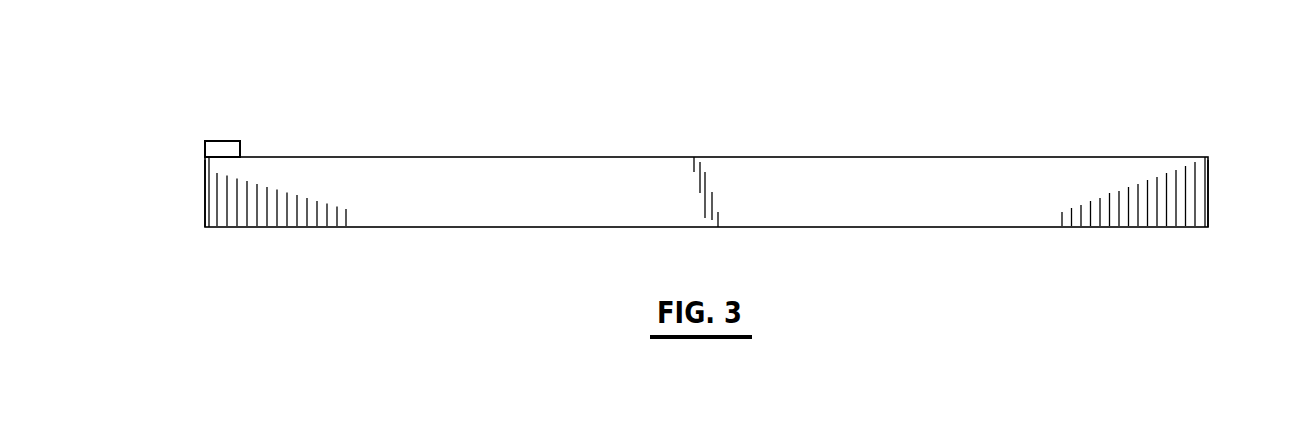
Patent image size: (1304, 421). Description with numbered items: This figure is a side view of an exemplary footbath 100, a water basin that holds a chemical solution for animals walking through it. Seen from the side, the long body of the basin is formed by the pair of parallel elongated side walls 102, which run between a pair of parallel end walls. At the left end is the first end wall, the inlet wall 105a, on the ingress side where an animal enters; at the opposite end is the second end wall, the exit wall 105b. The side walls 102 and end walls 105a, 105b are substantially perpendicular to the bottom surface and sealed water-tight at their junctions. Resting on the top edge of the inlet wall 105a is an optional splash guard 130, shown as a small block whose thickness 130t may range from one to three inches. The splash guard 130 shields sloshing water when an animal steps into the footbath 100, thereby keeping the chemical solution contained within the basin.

The footbath 100 is at (855, 257).
The elongated side walls 102 is at (500, 198).
The inlet wall 105a is at (205, 200).
The exit wall 105b is at (1208, 183).
The splash guard 130 is at (222, 141).
The thickness 130t is at (205, 148).